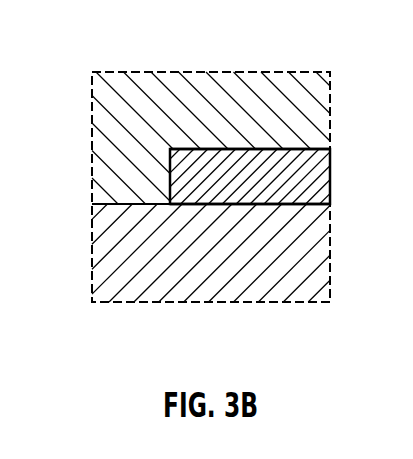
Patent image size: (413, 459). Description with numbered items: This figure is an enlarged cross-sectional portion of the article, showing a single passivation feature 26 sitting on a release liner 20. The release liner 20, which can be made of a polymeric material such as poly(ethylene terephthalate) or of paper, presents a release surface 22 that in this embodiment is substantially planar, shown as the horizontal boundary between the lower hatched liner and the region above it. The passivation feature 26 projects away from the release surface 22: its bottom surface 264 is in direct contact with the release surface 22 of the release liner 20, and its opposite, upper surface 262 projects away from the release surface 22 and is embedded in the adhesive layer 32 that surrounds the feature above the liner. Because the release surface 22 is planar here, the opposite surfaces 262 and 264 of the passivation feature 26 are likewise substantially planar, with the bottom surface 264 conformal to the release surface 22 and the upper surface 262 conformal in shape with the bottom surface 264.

The release liner 20 is at (113, 279).
The release surface 22 is at (112, 203).
The passivation feature 26 is at (315, 175).
The adhesive layer 32 is at (146, 73).
The upper surface 262 is at (278, 149).
The bottom surface 264 is at (310, 205).